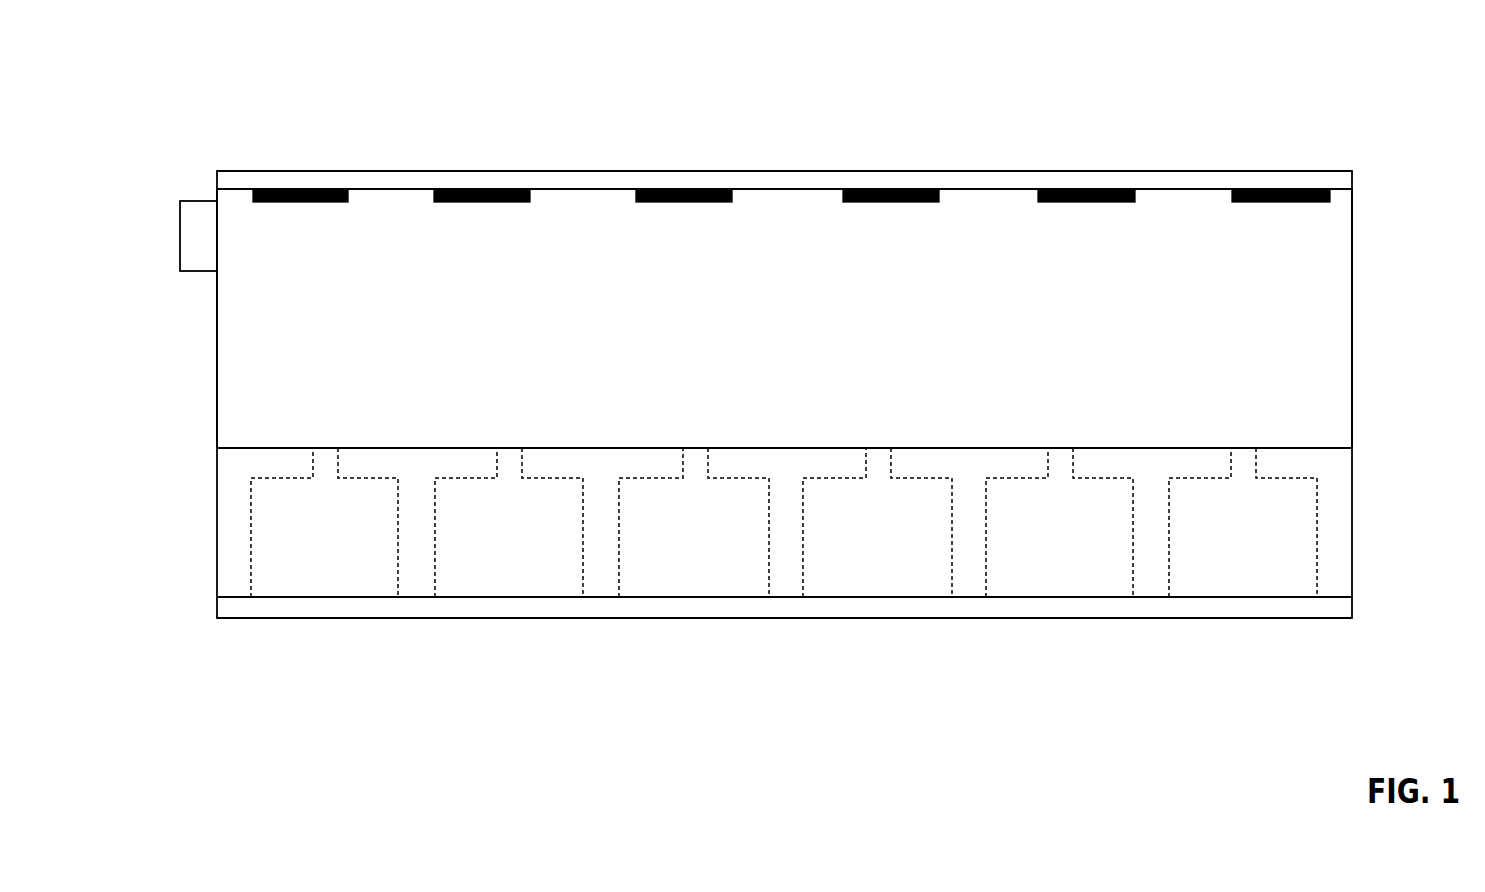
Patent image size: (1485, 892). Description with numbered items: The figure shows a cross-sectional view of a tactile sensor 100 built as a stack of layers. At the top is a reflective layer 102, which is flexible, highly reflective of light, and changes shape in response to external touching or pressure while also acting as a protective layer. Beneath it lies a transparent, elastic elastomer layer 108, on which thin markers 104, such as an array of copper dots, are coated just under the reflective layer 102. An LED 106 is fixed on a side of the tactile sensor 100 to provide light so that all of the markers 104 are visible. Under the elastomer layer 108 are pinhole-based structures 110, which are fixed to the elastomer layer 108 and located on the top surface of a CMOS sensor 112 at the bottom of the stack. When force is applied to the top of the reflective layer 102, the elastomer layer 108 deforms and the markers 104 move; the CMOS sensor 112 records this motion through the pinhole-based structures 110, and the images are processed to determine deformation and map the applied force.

The tactile sensor 100 is at (1353, 110).
The reflective layer 102 is at (233, 179).
The markers 104 is at (1315, 205).
The LED 106 is at (201, 265).
The elastomer layer 108 is at (214, 362).
The pinhole-based structures 110 is at (1355, 543).
The CMOS sensor 112 is at (264, 614).